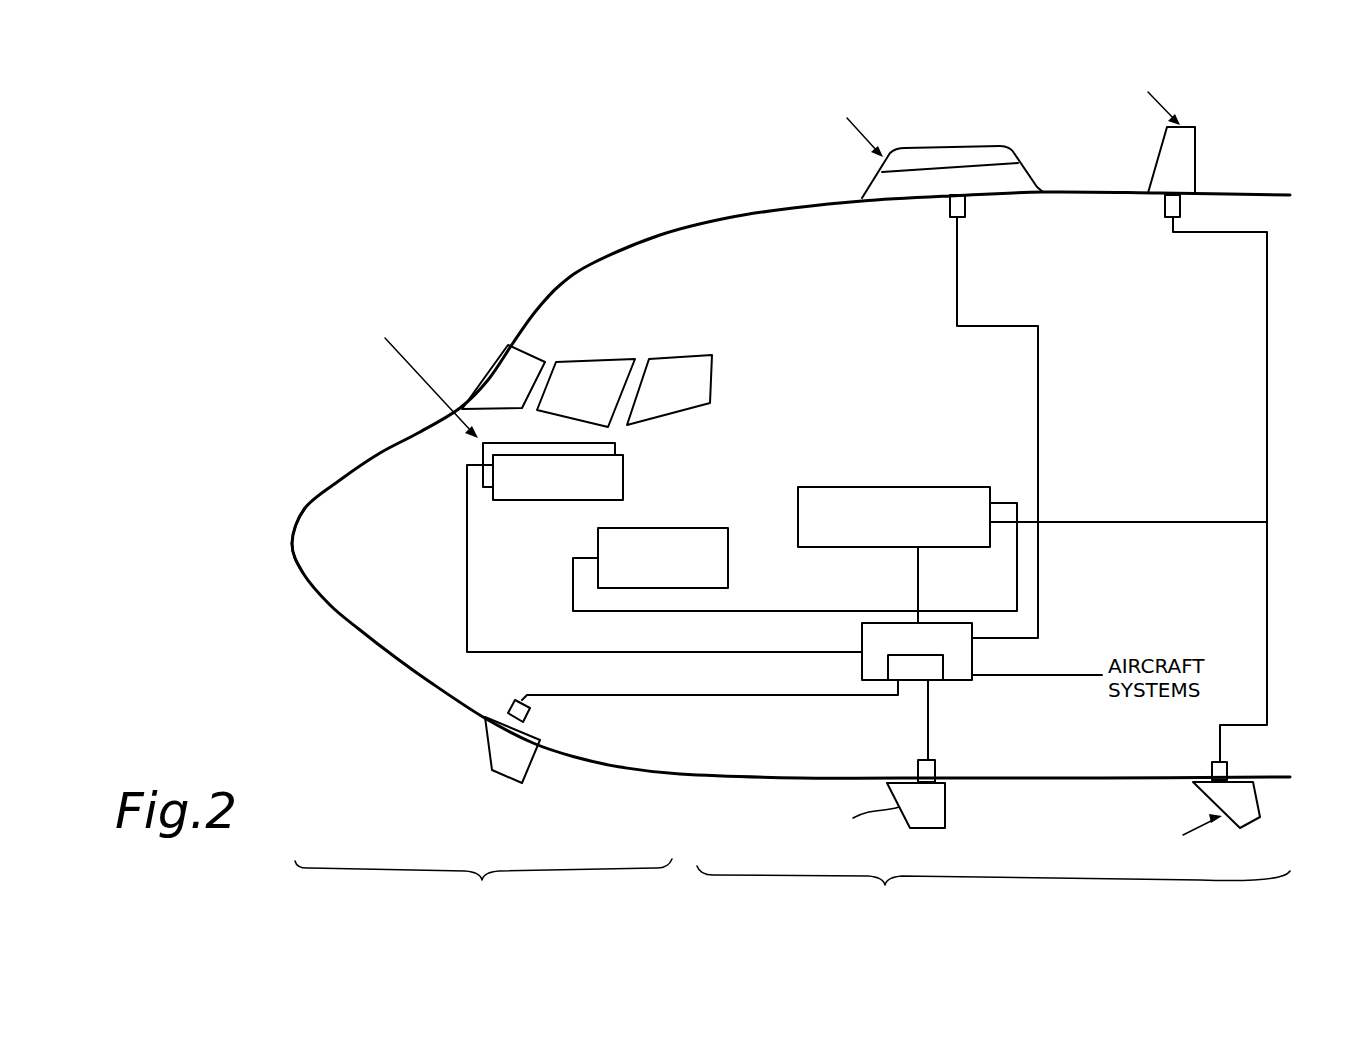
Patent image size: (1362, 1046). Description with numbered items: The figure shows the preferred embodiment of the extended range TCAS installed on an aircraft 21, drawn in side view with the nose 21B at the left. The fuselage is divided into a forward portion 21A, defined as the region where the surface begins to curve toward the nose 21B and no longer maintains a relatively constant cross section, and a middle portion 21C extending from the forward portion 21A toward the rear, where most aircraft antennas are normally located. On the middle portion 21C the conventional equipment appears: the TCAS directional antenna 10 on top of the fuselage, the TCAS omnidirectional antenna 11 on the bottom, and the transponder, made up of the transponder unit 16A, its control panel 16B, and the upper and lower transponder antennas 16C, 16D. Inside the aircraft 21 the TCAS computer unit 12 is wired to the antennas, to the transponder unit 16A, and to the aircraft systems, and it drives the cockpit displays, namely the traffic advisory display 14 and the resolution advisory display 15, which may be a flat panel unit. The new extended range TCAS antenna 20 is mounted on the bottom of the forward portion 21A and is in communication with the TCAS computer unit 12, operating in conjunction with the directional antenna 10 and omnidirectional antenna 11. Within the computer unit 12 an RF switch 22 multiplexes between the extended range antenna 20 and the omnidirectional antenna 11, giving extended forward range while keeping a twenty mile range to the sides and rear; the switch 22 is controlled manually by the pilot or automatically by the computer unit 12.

The TCAS directional antenna 10 is at (957, 147).
The TCAS omnidirectional antenna 11 is at (933, 828).
The TCAS computer unit 12 is at (953, 682).
The traffic advisory display 14 is at (625, 480).
The resolution advisory display 15 is at (615, 445).
The transponder unit 16A is at (907, 485).
The control panel 16B is at (728, 565).
The transponder antenna 16C is at (1197, 128).
The transponder antenna 16D is at (1253, 813).
The extended range TCAS antenna 20 is at (485, 762).
The aircraft 21 is at (662, 233).
The forward portion 21A is at (483, 884).
The nose 21B is at (290, 538).
The middle portion 21C is at (993, 891).
The RF switch 22 is at (915, 668).